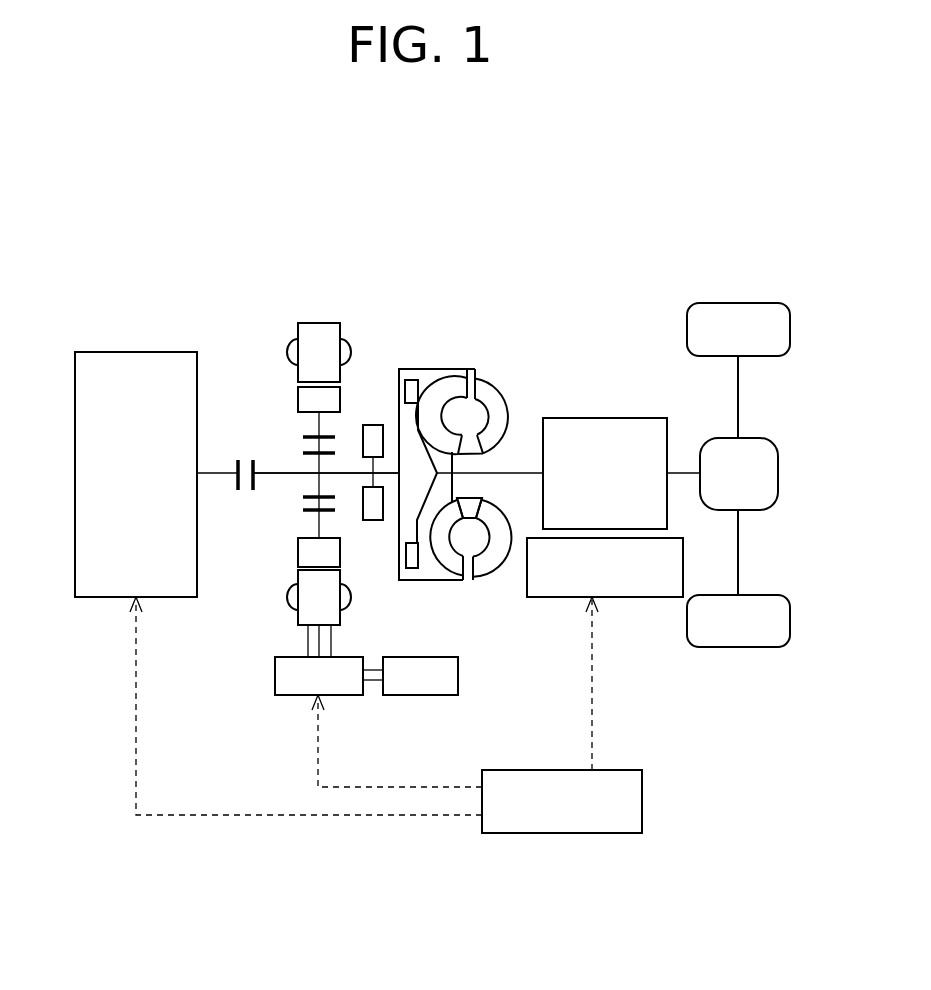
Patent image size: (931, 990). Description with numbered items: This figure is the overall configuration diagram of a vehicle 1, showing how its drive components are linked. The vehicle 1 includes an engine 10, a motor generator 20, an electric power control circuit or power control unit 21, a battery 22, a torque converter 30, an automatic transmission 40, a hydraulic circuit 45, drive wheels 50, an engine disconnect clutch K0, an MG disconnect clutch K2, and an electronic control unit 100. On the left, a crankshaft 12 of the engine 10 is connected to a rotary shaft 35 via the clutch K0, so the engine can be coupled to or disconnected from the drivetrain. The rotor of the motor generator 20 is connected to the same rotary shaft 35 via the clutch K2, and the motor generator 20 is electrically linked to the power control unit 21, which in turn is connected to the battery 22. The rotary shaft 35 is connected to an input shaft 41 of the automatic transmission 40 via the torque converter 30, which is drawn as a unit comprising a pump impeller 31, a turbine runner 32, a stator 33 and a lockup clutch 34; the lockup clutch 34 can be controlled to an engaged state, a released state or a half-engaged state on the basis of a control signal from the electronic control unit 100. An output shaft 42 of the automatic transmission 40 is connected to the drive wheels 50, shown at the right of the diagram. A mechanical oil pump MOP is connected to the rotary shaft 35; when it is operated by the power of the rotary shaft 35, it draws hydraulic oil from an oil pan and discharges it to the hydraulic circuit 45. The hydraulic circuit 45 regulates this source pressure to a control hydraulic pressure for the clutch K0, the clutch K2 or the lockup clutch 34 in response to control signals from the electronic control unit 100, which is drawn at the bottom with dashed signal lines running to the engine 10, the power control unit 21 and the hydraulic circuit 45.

The vehicle 1 is at (396, 213).
The engine 10 is at (140, 352).
The crankshaft 12 is at (216, 473).
The engine disconnect clutch K0 is at (243, 493).
The rotary shaft 35 is at (272, 473).
The motor generator 20 is at (326, 294).
The MG disconnect clutch K2 is at (300, 503).
The electric power control circuit 21 is at (288, 697).
The battery 22 is at (421, 697).
The mechanical oil pump MOP is at (372, 425).
The torque converter 30 is at (465, 453).
The pump impeller 31 is at (490, 555).
The turbine runner 32 is at (456, 560).
The stator 33 is at (470, 497).
The lockup clutch 34 is at (423, 573).
The input shaft 41 is at (528, 473).
The automatic transmission 40 is at (612, 418).
The output shaft 42 is at (683, 473).
The drive wheels 50 is at (741, 303).
The hydraulic circuit 45 is at (641, 598).
The electronic control unit 100 is at (628, 770).